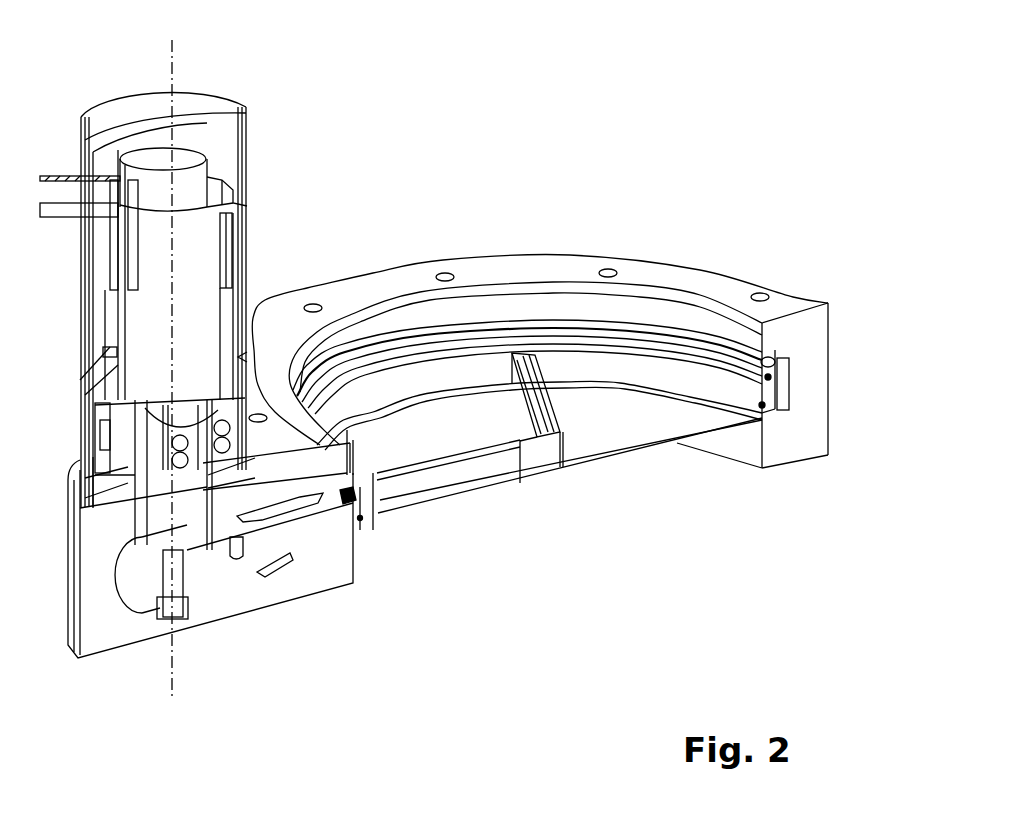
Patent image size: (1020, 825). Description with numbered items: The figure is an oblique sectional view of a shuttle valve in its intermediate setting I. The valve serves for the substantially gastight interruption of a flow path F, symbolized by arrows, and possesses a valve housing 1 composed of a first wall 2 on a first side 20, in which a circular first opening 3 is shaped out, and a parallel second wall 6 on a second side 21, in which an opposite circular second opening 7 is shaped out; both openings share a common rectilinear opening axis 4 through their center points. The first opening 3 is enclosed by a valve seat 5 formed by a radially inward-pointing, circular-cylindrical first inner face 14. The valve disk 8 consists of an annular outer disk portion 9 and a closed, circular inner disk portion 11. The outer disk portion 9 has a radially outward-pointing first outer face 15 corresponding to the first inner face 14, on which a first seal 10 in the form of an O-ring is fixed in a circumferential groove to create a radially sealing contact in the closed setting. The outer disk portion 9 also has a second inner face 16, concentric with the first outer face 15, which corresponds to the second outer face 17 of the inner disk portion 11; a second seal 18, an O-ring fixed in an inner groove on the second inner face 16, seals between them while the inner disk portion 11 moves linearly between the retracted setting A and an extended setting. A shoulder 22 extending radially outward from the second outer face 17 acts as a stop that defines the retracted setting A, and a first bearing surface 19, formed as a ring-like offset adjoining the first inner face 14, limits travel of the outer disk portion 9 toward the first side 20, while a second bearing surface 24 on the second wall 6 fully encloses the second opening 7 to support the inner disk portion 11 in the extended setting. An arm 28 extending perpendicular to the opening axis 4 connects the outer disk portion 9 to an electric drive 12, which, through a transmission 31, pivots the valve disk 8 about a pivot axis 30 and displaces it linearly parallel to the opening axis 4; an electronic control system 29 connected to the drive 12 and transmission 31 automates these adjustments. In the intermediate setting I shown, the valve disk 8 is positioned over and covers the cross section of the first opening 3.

The valve housing 1 is at (347, 272).
The first wall 2 is at (763, 337).
The first opening 3 is at (503, 300).
The opening axis 4 is at (561, 216).
The valve seat 5 is at (750, 332).
The second wall 6 is at (767, 445).
The second opening 7 is at (515, 547).
The valve disk 8 is at (600, 480).
The outer disk portion 9 is at (762, 393).
The first seal 10 is at (768, 377).
The inner disk portion 11 is at (632, 455).
The electric drive 12 is at (257, 207).
The first inner face 14 is at (767, 362).
The first outer face 15 is at (770, 385).
The second inner face 16 is at (362, 495).
The second outer face 17 is at (363, 508).
The second seal 18 is at (773, 410).
The first bearing surface 19 is at (767, 357).
The first side 20 is at (642, 233).
The second side 21 is at (689, 471).
The shoulder 22 is at (762, 408).
The second bearing surface 24 is at (762, 413).
The arm 28 is at (307, 535).
The electronic control system 29 is at (157, 190).
The pivot axis 30 is at (173, 53).
The transmission 31 is at (112, 442).
The retracted setting A is at (625, 377).
The intermediate setting I is at (451, 429).
The flow path F is at (553, 582).